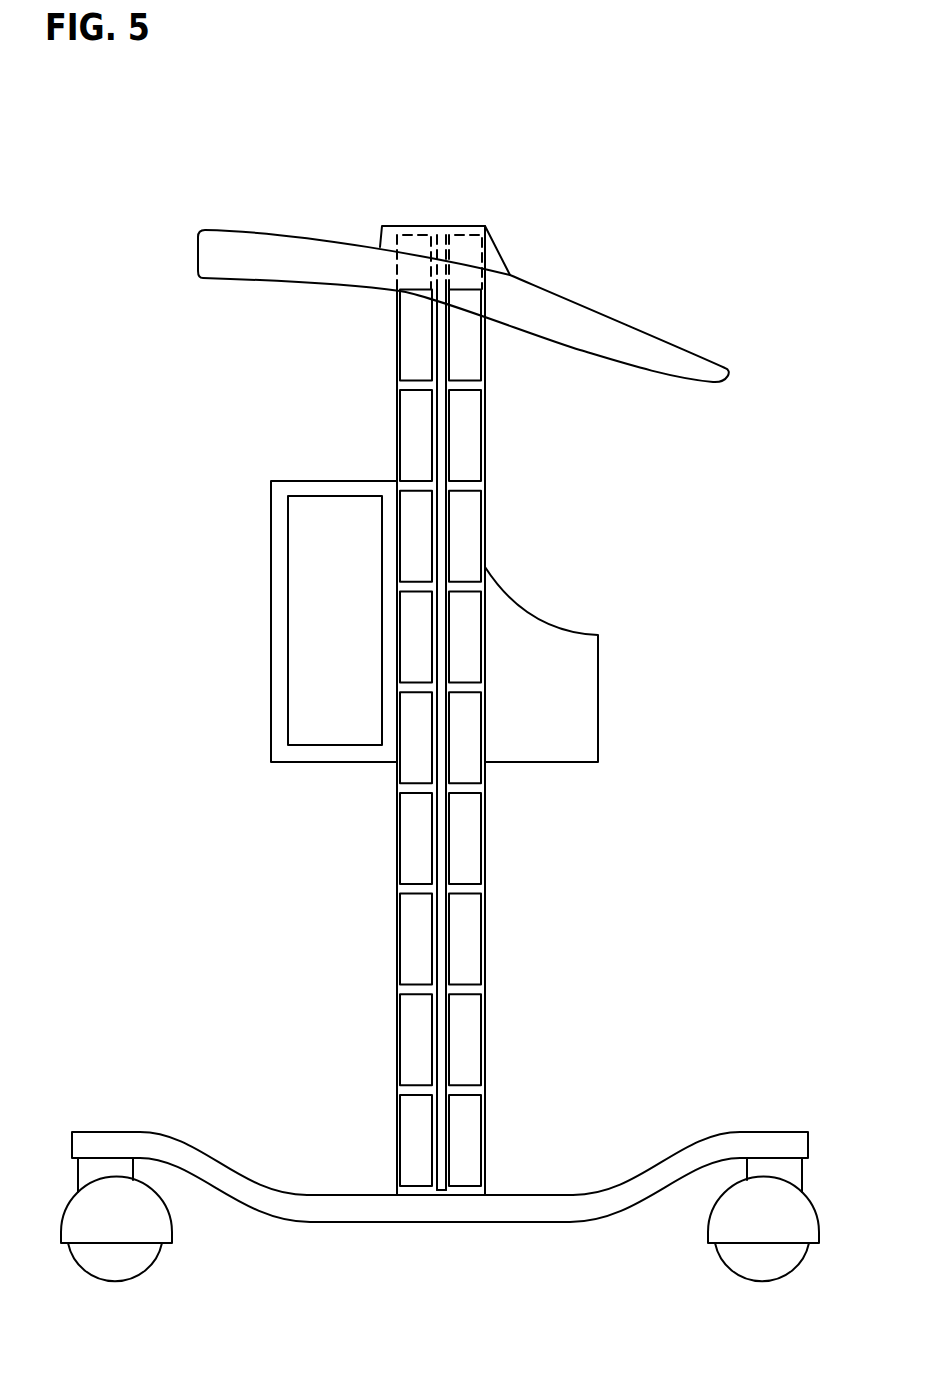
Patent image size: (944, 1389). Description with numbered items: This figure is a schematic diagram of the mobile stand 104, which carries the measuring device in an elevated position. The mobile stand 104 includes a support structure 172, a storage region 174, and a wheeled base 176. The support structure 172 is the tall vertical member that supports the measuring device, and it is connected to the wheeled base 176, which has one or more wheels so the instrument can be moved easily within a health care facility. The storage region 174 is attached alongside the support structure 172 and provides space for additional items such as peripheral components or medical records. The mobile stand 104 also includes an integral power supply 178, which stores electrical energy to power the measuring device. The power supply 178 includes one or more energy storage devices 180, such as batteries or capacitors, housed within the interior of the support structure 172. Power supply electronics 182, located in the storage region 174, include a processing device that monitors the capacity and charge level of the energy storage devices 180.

The mobile stand 104 is at (110, 222).
The support structure 172 is at (486, 433).
The storage region 174 is at (300, 482).
The wheeled base 176 is at (700, 1105).
The integral power supply 178 is at (356, 453).
The energy storage devices 180 is at (418, 526).
The power supply electronics 182 is at (298, 533).